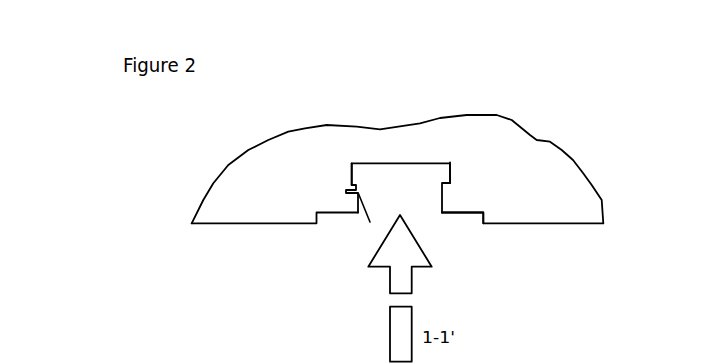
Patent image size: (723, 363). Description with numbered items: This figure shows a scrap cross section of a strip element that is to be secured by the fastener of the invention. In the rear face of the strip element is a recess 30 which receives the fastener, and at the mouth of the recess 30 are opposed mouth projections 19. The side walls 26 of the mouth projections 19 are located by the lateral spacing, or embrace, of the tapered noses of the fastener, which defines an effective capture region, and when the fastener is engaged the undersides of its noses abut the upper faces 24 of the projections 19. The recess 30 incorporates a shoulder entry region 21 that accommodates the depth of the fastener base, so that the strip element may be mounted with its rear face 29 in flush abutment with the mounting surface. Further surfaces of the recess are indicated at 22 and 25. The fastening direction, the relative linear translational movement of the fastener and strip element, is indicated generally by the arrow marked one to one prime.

The mouth projections 19 is at (358, 206).
The shoulder entry region 21 is at (463, 213).
The cap side wall 22 is at (450, 166).
The upper faces 24 is at (346, 193).
The cap side wall 25 is at (352, 172).
The side walls 26 is at (447, 186).
The rear face 29 is at (558, 223).
The recess 30 is at (395, 170).